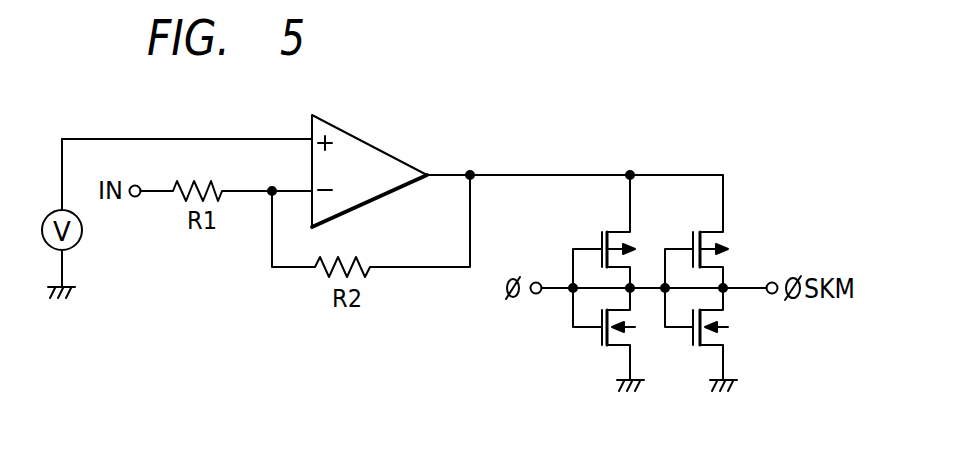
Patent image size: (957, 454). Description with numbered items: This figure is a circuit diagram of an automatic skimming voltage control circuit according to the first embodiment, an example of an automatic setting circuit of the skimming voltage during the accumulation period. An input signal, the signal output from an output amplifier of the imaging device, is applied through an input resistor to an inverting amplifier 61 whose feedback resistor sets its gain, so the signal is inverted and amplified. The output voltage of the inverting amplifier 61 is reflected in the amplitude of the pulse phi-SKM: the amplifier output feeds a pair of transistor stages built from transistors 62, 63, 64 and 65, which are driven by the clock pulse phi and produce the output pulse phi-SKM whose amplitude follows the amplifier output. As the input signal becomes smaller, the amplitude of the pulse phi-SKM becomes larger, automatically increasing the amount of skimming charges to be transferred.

The inverting amplifier 61 is at (392, 153).
The P-channel MOS transistor 62 is at (600, 242).
The N-channel MOS transistor 63 is at (597, 337).
The P-channel MOS transistor 64 is at (691, 240).
The N-channel MOS transistor 65 is at (690, 337).